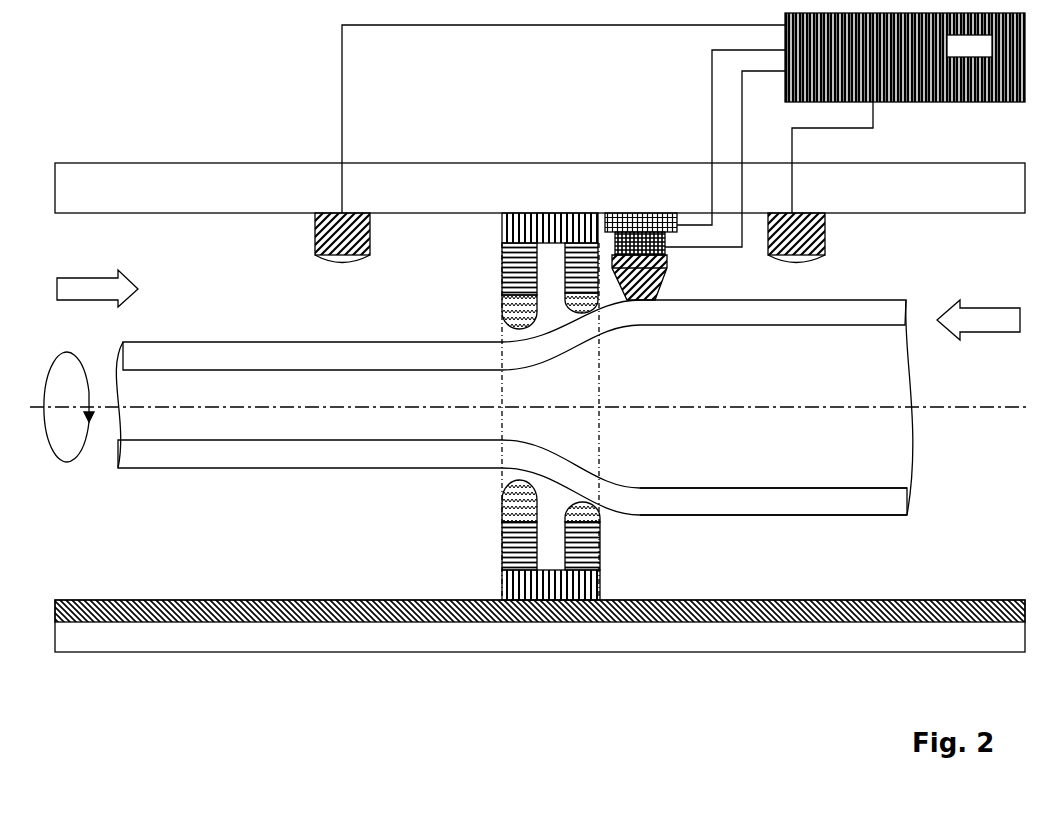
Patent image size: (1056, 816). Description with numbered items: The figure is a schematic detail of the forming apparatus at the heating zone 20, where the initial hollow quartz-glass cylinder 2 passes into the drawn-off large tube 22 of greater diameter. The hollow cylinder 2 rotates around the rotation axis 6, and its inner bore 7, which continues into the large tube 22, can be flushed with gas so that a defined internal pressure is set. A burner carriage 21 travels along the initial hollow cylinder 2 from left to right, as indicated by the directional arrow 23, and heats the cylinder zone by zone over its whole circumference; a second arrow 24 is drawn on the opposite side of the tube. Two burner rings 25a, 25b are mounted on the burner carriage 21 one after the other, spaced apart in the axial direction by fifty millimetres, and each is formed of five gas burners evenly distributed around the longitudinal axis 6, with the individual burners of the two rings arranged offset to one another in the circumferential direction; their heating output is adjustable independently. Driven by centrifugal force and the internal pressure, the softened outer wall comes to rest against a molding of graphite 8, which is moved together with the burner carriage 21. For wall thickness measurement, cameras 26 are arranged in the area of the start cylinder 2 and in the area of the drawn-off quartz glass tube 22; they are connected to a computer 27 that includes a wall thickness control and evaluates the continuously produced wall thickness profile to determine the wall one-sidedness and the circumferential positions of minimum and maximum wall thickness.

The hollow quartz-glass cylinder 2 is at (173, 457).
The rotation axis 6 is at (1005, 409).
The inner bore 7 is at (718, 367).
The molding of graphite 8 is at (667, 275).
The heating zone 20 is at (500, 392).
The burner carriage 21 is at (538, 593).
The large tube 22 is at (808, 505).
The directional arrow 23 is at (85, 285).
The return direction 24 is at (993, 320).
The first burner ring 25a is at (500, 538).
The second burner ring 25b is at (585, 548).
The cameras 26 is at (370, 237).
The computer 27 is at (958, 80).